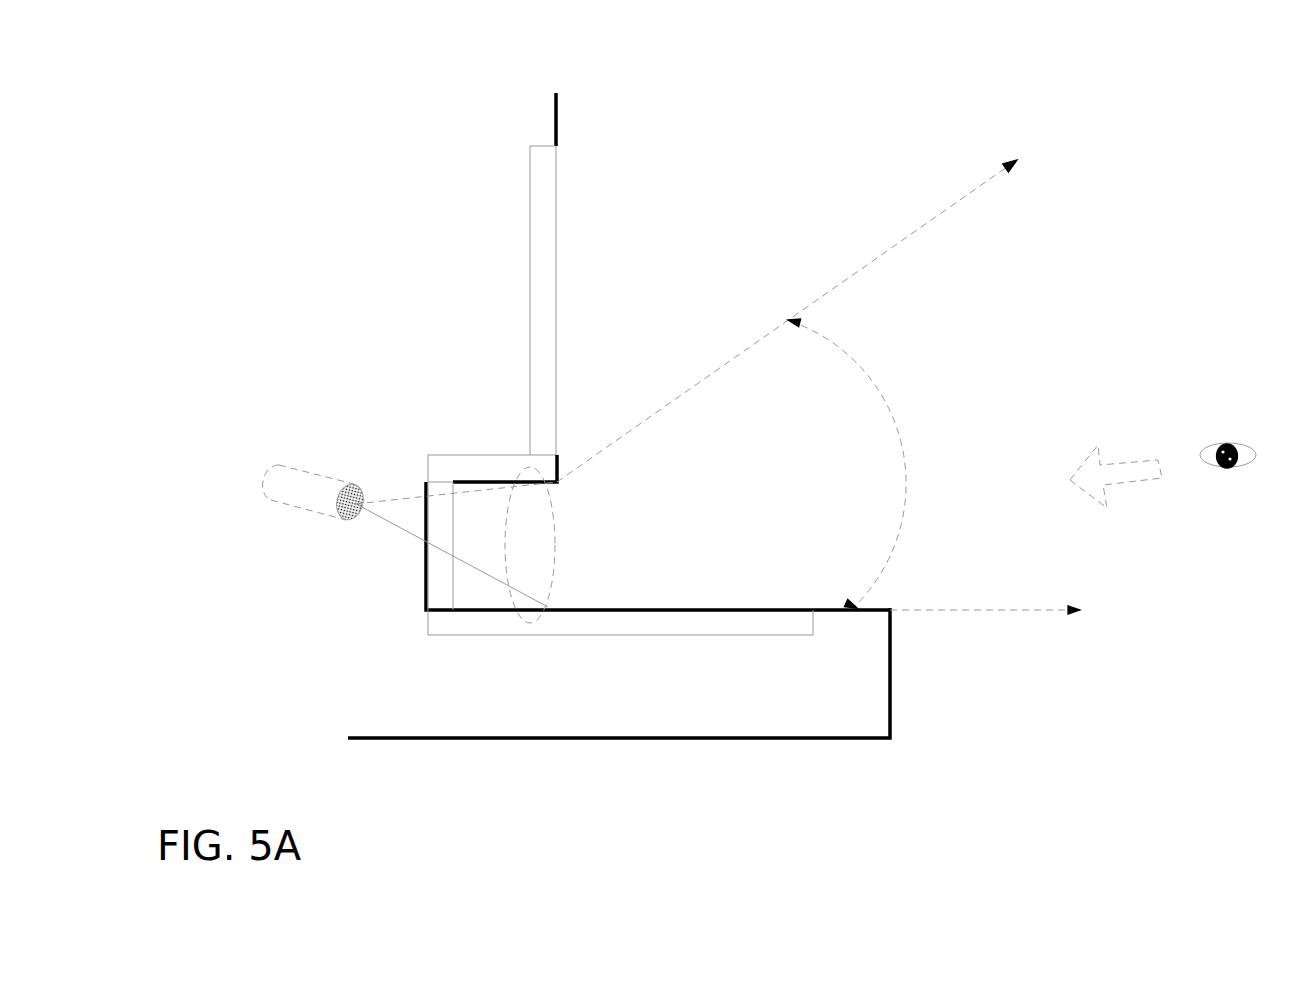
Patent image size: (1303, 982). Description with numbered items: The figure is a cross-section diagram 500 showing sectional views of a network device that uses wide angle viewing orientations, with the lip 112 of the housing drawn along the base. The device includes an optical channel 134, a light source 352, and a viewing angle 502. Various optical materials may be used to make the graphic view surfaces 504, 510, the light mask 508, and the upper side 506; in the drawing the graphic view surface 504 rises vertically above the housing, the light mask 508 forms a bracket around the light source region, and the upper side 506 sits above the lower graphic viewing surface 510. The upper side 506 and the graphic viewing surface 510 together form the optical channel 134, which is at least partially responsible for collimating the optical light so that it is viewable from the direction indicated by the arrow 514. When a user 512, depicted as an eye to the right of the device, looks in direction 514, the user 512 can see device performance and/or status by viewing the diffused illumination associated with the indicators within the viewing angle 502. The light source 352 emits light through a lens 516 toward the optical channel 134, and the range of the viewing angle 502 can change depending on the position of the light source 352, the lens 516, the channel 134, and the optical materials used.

The cross-section diagram 500 is at (1208, 122).
The viewing angle 502 is at (934, 466).
The graphic view surface 504 is at (575, 274).
The upper side 506 is at (505, 455).
The light mask 508 is at (426, 560).
The graphic viewing surface 510 is at (652, 622).
The user 512 is at (1235, 442).
The direction 514 is at (1118, 485).
The lens 516 is at (353, 522).
The light source 352 is at (338, 480).
The optical channel 134 is at (532, 623).
The lip 112 is at (788, 710).